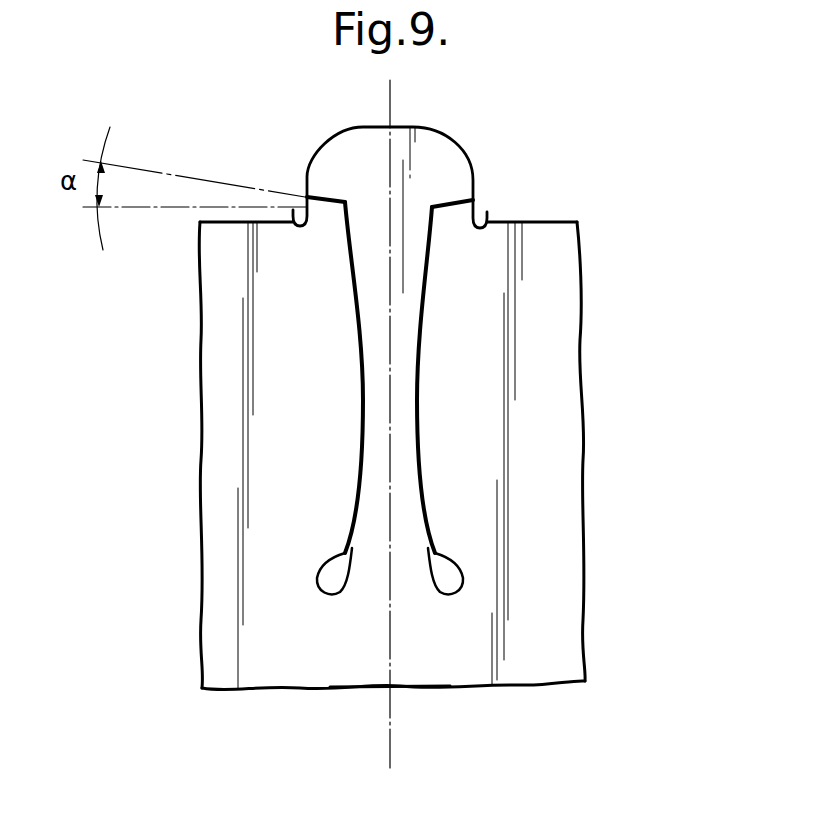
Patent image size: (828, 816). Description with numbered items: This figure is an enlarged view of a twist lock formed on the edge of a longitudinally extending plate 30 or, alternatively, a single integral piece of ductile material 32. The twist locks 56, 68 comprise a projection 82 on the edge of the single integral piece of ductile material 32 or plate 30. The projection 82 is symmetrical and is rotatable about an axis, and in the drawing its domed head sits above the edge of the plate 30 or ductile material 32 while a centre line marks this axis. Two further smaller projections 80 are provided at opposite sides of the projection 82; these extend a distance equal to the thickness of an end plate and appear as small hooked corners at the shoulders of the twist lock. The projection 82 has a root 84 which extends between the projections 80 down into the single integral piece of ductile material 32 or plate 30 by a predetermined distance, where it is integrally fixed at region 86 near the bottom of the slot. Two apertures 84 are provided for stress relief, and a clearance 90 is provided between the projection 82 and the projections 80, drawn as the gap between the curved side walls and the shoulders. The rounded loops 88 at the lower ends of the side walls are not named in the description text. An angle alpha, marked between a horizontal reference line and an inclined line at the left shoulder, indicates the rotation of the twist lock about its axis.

The plate 30 is at (560, 393).
The single integral piece of ductile material 32 is at (458, 456).
The twist lock 56 is at (470, 182).
The twist lock 68 is at (482, 205).
The smaller projections 80 is at (440, 217).
The projection 82 is at (332, 163).
The root 84 is at (380, 290).
The region 86 is at (414, 590).
The end loops 88 is at (324, 574).
The clearance 90 is at (353, 278).